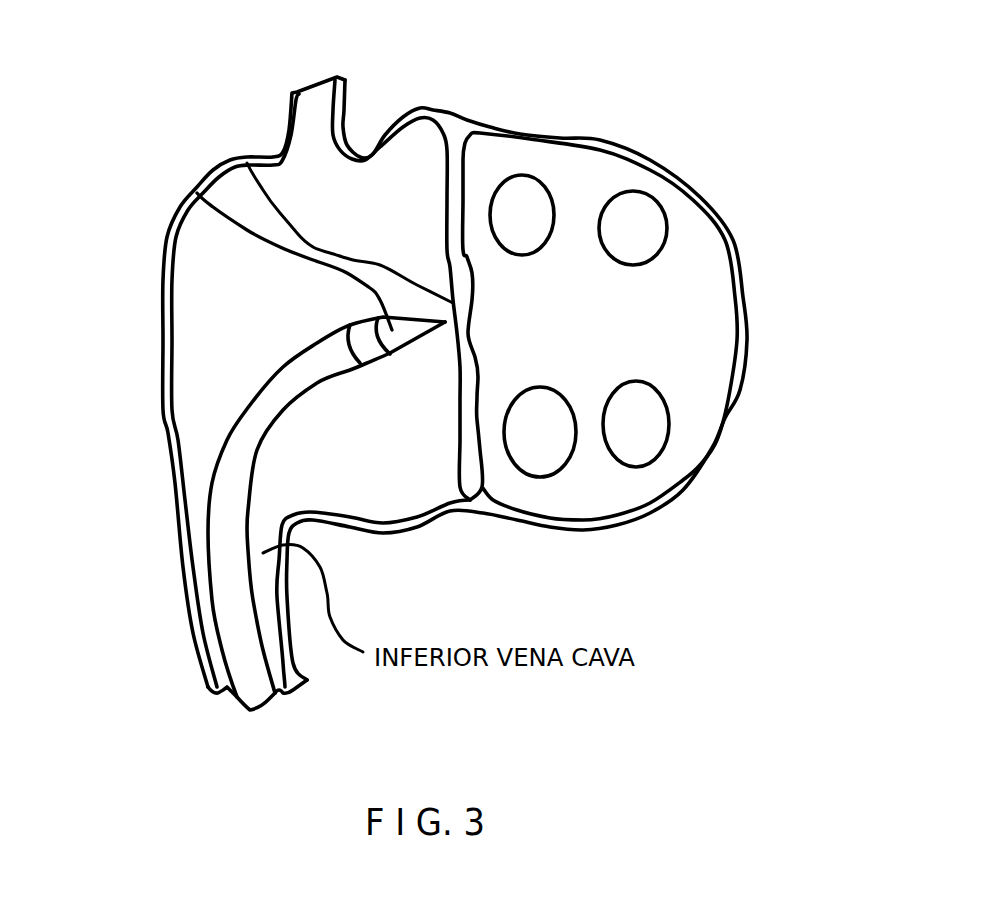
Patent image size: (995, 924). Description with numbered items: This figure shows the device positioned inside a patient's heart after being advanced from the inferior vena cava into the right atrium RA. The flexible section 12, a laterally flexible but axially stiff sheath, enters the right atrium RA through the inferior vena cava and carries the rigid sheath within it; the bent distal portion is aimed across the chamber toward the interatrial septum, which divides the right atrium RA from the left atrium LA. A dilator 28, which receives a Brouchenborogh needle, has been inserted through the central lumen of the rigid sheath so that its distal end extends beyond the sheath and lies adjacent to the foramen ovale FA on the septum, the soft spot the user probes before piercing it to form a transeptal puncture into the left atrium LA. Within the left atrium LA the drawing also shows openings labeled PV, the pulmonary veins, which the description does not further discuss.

The flexible section 12 is at (250, 413).
The dilator 28 is at (197, 193).
The pulmonary vein PV is at (530, 200).
The right atrium RA is at (400, 180).
The left atrium LA is at (697, 363).
The element FA is at (247, 163).